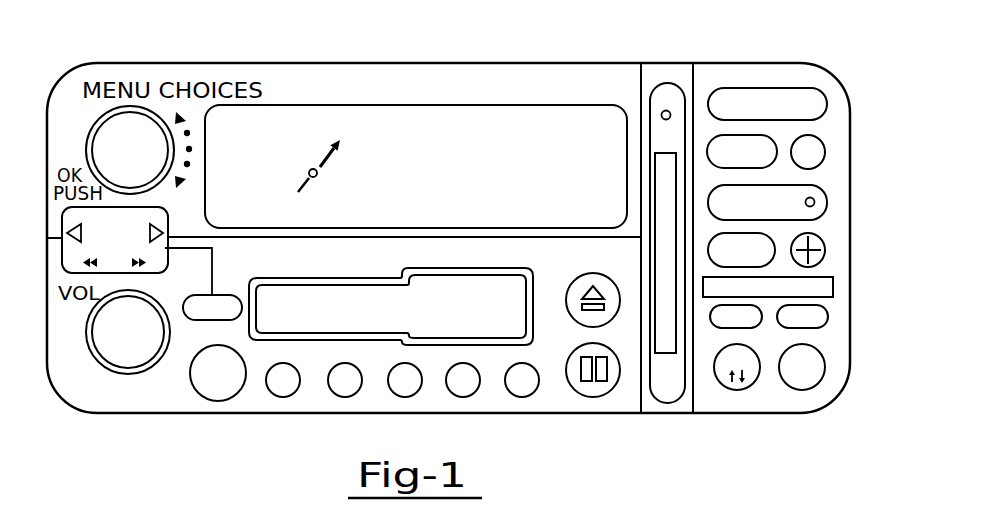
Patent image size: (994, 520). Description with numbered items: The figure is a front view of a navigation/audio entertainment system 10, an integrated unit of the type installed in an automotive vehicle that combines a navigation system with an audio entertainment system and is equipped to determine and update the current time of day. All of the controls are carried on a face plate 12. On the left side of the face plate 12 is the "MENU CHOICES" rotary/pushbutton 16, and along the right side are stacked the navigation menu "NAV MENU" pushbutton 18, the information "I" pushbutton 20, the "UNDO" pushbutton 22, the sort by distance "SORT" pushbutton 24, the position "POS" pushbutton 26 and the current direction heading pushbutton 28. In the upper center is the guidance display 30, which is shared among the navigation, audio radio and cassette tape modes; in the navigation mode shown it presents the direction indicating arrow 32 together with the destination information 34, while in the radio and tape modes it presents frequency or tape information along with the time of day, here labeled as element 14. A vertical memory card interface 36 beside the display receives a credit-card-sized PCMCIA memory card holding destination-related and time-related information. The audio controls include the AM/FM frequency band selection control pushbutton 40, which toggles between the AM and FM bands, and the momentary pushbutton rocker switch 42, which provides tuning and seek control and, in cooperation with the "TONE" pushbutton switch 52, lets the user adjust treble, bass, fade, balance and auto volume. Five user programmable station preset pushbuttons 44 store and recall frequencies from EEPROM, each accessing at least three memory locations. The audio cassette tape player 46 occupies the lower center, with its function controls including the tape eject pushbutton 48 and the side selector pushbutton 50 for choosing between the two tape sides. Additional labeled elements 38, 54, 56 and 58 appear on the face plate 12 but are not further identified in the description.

The navigation/audio entertainment system 10 is at (440, 42).
The face plate 12 is at (553, 62).
The time display 14 is at (557, 198).
The "MENU CHOICES" rotary/pushbutton 16 is at (122, 142).
The navigation menu "NAV MENU" pushbutton 18 is at (813, 30).
The information "I" pushbutton 20 is at (822, 143).
The "UNDO" pushbutton 22 is at (768, 148).
The sort by distance "SORT" pushbutton 24 is at (822, 189).
The position "POS" pushbutton 26 is at (768, 236).
The current direction heading pushbutton 28 is at (826, 250).
The guidance display 30 is at (362, 105).
The direction indicating arrow 32 is at (315, 155).
The destination information 34 is at (555, 157).
The memory card interface 36 is at (667, 175).
The volume knob 38 is at (123, 343).
The AM/FM frequency band selection control pushbutton 40 is at (818, 363).
The momentary pushbutton rocker switch 42 is at (62, 217).
The user programmable station preset pushbuttons 44 is at (287, 398).
The audio cassette tape player 46 is at (480, 320).
The tape eject pushbutton 48 is at (617, 307).
The side selector pushbutton 50 is at (748, 385).
The "TONE" pushbutton switch 52 is at (218, 320).
The pause button 54 is at (573, 383).
The radio button 56 is at (710, 328).
The NAV button 58 is at (823, 317).